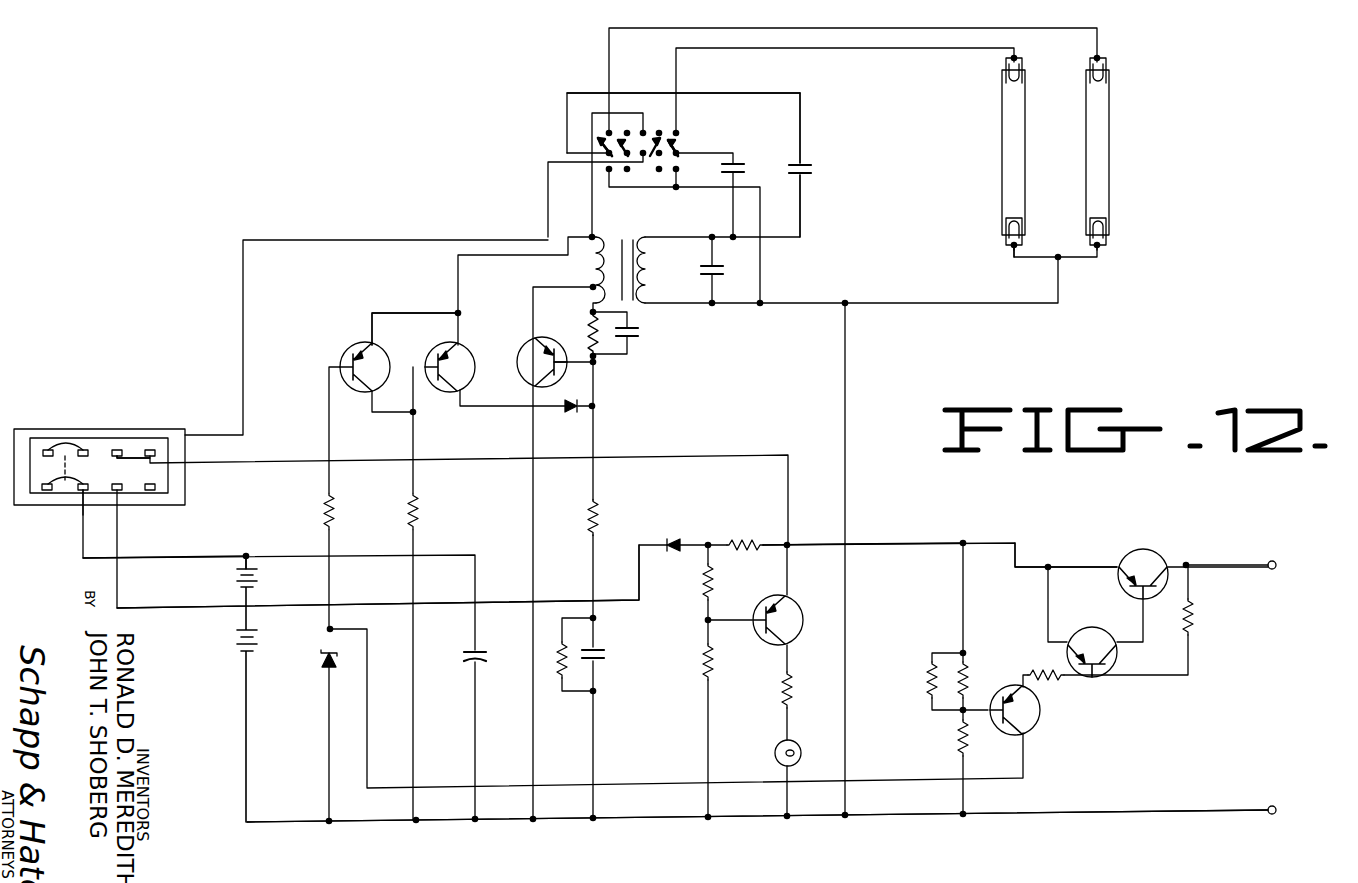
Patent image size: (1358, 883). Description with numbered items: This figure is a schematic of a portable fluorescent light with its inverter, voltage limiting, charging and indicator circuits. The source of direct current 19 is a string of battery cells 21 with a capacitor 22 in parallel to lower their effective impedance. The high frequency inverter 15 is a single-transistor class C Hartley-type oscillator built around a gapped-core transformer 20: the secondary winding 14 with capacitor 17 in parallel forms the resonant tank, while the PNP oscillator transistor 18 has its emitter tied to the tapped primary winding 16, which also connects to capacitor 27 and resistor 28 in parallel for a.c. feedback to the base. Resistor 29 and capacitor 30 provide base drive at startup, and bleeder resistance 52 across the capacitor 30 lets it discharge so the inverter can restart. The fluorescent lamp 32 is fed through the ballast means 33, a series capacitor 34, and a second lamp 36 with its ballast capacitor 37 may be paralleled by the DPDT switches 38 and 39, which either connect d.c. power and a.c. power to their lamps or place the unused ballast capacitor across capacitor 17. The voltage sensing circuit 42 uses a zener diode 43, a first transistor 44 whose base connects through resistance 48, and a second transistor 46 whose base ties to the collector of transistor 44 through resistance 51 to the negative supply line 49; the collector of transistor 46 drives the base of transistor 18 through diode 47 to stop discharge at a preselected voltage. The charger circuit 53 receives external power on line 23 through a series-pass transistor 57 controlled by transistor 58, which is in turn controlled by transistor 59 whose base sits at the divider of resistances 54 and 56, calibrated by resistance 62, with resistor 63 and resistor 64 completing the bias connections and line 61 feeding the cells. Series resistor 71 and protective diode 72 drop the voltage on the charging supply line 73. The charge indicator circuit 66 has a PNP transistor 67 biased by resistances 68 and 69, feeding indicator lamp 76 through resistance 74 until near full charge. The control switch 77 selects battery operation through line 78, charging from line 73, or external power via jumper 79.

The secondary winding 14 is at (650, 239).
The high frequency inverter 15 is at (465, 170).
The primary winding 16 is at (598, 260).
The capacitor 17 is at (716, 271).
The oscillator transistor 18 is at (518, 370).
The source of direct current 19 is at (250, 556).
The transformer 20 is at (614, 243).
The battery cells 21 is at (257, 580).
The capacitor 22 is at (494, 650).
The connections for external charging power 23 is at (1232, 565).
The capacitor 27 is at (640, 336).
The resistor 28 is at (590, 326).
The resistor 29 is at (612, 508).
The capacitor 30 is at (605, 656).
The fluorescent lamp 32 is at (1109, 157).
The ballast means 33 is at (820, 135).
The ballast capacitor 34 is at (815, 160).
The second lamp 36 is at (1002, 155).
The ballast capacitor 37 is at (737, 173).
The switch 38 is at (676, 152).
The switch 39 is at (600, 148).
The voltage sensing circuit 42 is at (352, 317).
The zener diode 43 is at (324, 672).
The first transistor 44 is at (359, 394).
The second transistor 46 is at (451, 394).
The diode 47 is at (572, 414).
The resistance 48 is at (340, 512).
The negative supply line 49 is at (247, 803).
The resistance 51 is at (420, 515).
The bleeder resistance 52 is at (553, 678).
The charger circuit 53 is at (1050, 562).
The resistance 54 is at (970, 676).
The resistance 56 is at (958, 740).
The transistor 57 is at (1140, 549).
The transistor 58 is at (1092, 686).
The transistor 59 is at (1028, 730).
The d.c. supply line 61 is at (920, 542).
The resistance 62 is at (926, 676).
The resistor 63 is at (1193, 622).
The resistor 64 is at (1058, 678).
The charge indicator circuit 66 is at (801, 544).
The transistor 67 is at (800, 607).
The resistance 68 is at (706, 580).
The resistance 69 is at (702, 662).
The series resistor 71 is at (756, 538).
The protective diode 72 is at (666, 542).
The charging supply line 73 is at (616, 601).
The resistance 74 is at (794, 692).
The indicator lamp 76 is at (775, 752).
The control switch 77 is at (116, 429).
The line 78 is at (169, 558).
The jumper 79 is at (100, 472).